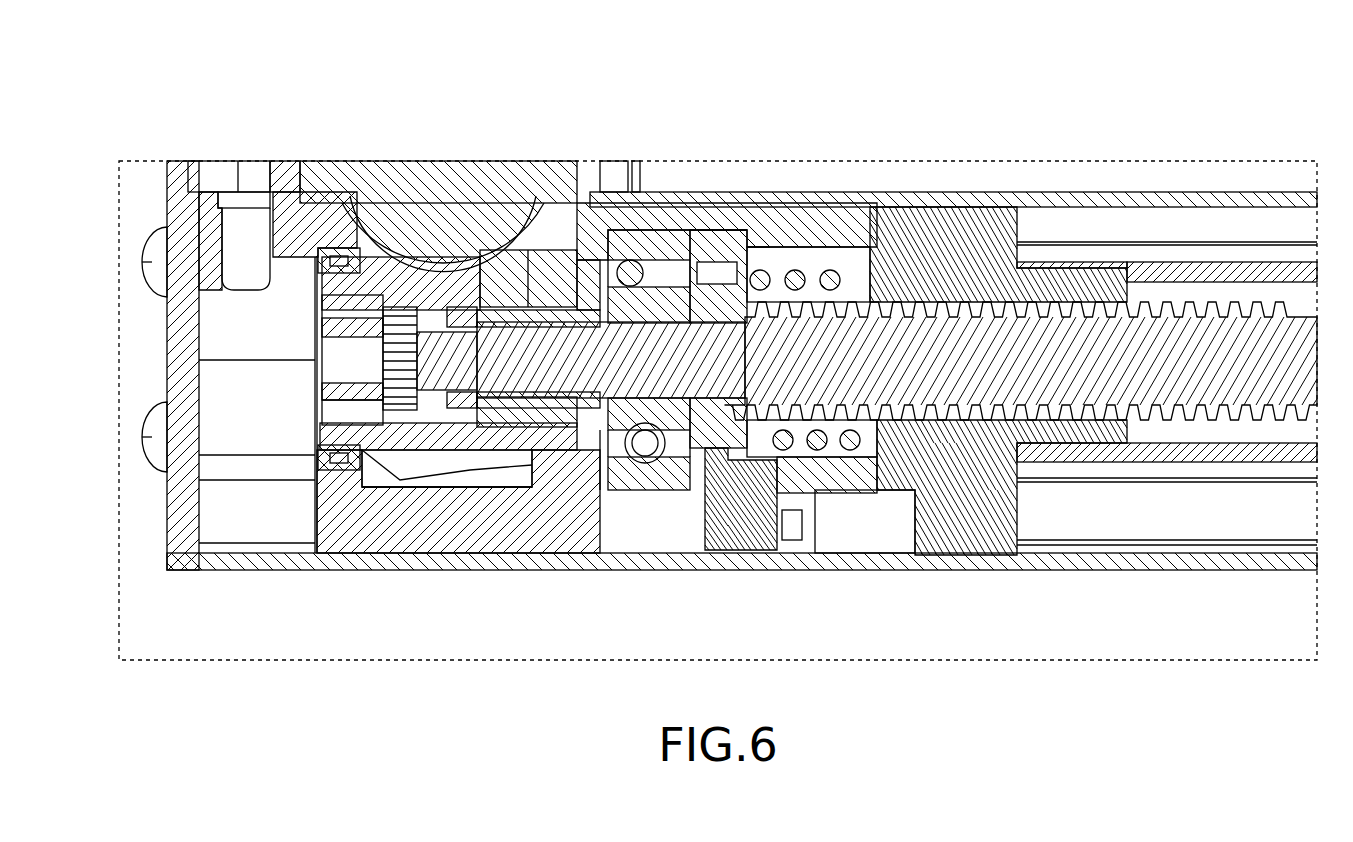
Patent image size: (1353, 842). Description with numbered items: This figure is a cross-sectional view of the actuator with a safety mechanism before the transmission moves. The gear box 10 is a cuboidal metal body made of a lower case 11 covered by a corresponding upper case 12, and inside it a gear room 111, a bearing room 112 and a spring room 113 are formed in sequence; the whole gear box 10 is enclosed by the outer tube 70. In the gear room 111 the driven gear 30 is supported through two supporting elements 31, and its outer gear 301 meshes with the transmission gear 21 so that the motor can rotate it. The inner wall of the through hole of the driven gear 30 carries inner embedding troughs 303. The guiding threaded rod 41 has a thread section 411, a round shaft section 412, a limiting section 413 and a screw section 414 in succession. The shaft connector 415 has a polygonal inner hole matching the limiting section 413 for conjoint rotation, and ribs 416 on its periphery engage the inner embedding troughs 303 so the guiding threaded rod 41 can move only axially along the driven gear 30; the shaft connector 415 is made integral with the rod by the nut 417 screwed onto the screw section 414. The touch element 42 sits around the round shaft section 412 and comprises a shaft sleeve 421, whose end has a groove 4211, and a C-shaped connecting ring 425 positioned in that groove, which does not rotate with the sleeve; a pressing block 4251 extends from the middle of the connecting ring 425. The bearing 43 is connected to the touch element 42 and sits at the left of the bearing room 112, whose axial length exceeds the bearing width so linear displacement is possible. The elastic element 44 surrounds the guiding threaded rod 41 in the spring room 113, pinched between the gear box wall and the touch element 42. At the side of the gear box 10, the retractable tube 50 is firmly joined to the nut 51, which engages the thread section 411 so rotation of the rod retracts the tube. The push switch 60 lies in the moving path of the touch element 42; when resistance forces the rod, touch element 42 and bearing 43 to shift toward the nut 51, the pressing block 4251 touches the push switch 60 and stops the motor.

The gear box 10 is at (729, 375).
The lower case 11 is at (838, 208).
The upper case 12 is at (548, 525).
The transmission gear 21 is at (384, 185).
The driven gear 30 is at (441, 529).
The outer gear 301 is at (415, 480).
The inner embedding troughs 303 is at (457, 420).
The supporting elements 31 is at (573, 246).
The guiding threaded rod 41 is at (819, 371).
The thread section 411 is at (1165, 418).
The round shaft section 412 is at (676, 330).
The limiting section 413 is at (478, 260).
The screw section 414 is at (457, 307).
The shaft connector 415 is at (595, 463).
The ribs 416 is at (513, 420).
The nut 417 is at (428, 250).
The touch element 42 is at (756, 386).
The shaft sleeve 421 is at (780, 265).
The groove 4211 is at (738, 554).
The connecting ring 425 is at (668, 500).
The pressing block 4251 is at (742, 530).
The bearing 43 is at (648, 255).
The elastic element 44 is at (780, 450).
The retractable tube 50 is at (1220, 262).
The nut 51 is at (957, 225).
The push switch 60 is at (848, 525).
The outer tube 70 is at (1067, 556).
The gear room 111 is at (528, 300).
The bearing room 112 is at (698, 230).
The spring room 113 is at (757, 250).